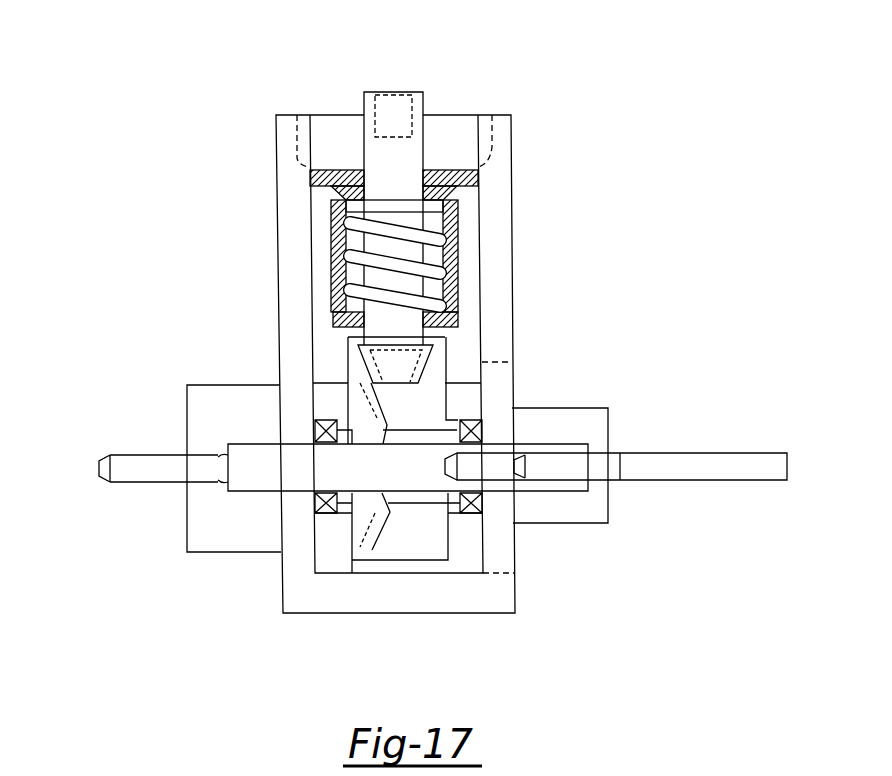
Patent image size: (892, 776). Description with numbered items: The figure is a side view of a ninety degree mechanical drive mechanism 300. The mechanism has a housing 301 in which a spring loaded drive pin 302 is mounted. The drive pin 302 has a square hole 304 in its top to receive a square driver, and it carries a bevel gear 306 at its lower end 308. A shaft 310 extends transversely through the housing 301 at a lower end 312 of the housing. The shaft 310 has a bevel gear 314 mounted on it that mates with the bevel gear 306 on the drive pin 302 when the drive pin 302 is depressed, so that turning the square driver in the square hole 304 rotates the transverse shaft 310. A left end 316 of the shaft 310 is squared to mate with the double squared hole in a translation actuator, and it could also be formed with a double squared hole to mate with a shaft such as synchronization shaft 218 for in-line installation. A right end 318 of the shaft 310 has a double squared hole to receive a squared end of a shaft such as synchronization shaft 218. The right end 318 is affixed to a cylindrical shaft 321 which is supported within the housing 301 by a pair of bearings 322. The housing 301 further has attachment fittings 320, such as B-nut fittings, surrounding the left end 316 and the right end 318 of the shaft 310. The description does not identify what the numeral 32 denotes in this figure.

The mechanical drive mechanism 300 is at (517, 187).
The housing 301 is at (277, 330).
The spring loaded drive pin 302 is at (417, 90).
The square hole 304 is at (410, 102).
The bevel gear 306 is at (420, 360).
The lower end 308 is at (333, 290).
The shaft 310 is at (428, 478).
The lower end 312 is at (283, 585).
The bevel gear 314 is at (390, 540).
The left end 316 is at (168, 485).
The right end 318 is at (578, 438).
The attachment fittings 320 is at (205, 383).
The cylindrical shaft 321 is at (488, 350).
The bearings 322 is at (465, 425).
The actuator 32 is at (552, 405).
The synchronization shaft 218 is at (643, 448).